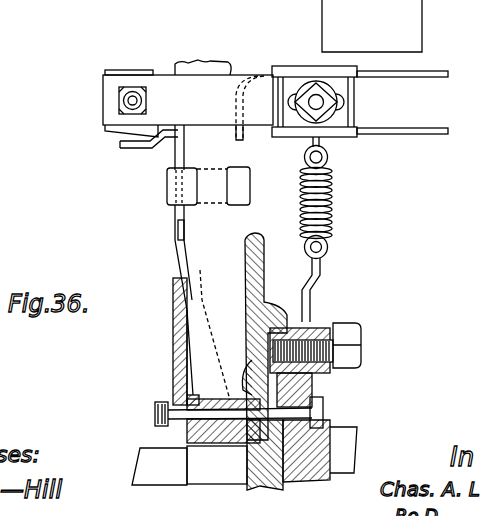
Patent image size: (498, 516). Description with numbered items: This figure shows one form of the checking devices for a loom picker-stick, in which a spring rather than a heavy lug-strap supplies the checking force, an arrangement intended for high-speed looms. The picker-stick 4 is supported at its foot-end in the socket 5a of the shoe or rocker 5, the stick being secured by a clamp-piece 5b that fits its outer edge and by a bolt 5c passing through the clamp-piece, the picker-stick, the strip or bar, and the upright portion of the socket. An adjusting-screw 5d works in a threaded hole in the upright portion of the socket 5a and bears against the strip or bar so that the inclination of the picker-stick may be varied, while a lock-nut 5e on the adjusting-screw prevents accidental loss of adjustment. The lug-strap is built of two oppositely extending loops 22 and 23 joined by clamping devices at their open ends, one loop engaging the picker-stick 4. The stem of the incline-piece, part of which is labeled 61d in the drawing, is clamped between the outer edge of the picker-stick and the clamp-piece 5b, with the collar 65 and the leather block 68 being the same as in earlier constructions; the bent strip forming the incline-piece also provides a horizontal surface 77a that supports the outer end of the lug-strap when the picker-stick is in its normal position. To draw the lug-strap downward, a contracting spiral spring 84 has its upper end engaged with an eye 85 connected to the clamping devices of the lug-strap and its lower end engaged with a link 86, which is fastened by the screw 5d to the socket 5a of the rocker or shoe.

The picker-stick 4 is at (183, 66).
The loop of the lug-strap 23 is at (207, 74).
The loop of the lug-strap 22 is at (430, 136).
The eye 85 is at (320, 143).
The contracting spiral spring 84 is at (329, 208).
The link 86 is at (311, 292).
The horizontal surface 77a is at (123, 143).
The rod 61d is at (147, 145).
The collar 65 is at (167, 195).
The leather block 68 is at (179, 235).
The clamp-piece 5b is at (178, 357).
The lock-nut 5e is at (316, 319).
The adjusting-screw 5d is at (361, 334).
The socket 5a is at (312, 393).
The bolt 5c is at (326, 417).
The supporting shoe or rocker 5 is at (360, 429).